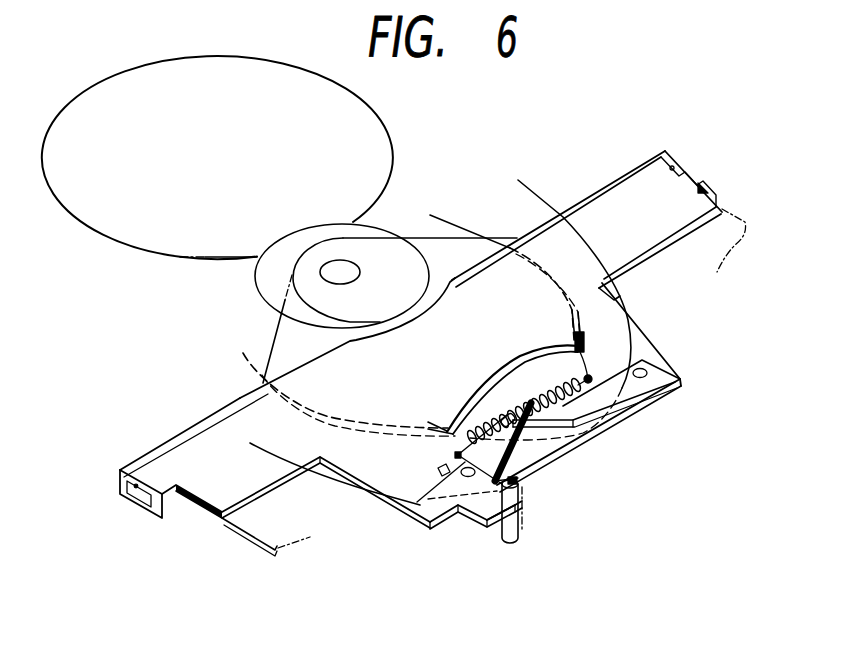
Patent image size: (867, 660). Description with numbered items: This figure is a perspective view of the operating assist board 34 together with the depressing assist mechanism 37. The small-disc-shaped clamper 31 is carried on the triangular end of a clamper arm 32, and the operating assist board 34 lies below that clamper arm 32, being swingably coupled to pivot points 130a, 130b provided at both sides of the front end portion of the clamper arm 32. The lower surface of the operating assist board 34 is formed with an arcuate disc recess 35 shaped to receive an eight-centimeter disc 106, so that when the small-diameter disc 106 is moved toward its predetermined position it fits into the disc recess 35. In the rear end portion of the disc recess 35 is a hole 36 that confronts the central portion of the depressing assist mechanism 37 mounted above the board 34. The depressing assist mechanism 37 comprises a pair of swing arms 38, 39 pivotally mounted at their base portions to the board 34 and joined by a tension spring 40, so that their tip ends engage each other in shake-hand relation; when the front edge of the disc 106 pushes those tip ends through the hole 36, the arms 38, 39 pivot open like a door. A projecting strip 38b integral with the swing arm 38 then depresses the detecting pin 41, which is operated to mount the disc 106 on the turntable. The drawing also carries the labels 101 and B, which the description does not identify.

The disc 106 is at (377, 108).
The guide arc 101 is at (547, 196).
The pivot point 130b is at (677, 153).
The clamper 31 is at (255, 287).
The arcuate disc recess 35 is at (582, 313).
The tension spring 40 is at (530, 388).
The hole 36 is at (588, 356).
The swing arm 39 is at (644, 386).
The arc path B is at (628, 388).
The depressing assist mechanism 37 is at (556, 476).
The detecting pin 41 is at (522, 530).
The swing arm 38 is at (453, 513).
The projecting strip 38b is at (482, 523).
The operating assist board 34 is at (368, 463).
The pivot point 130a is at (136, 489).
The clamper arm 32 is at (253, 552).